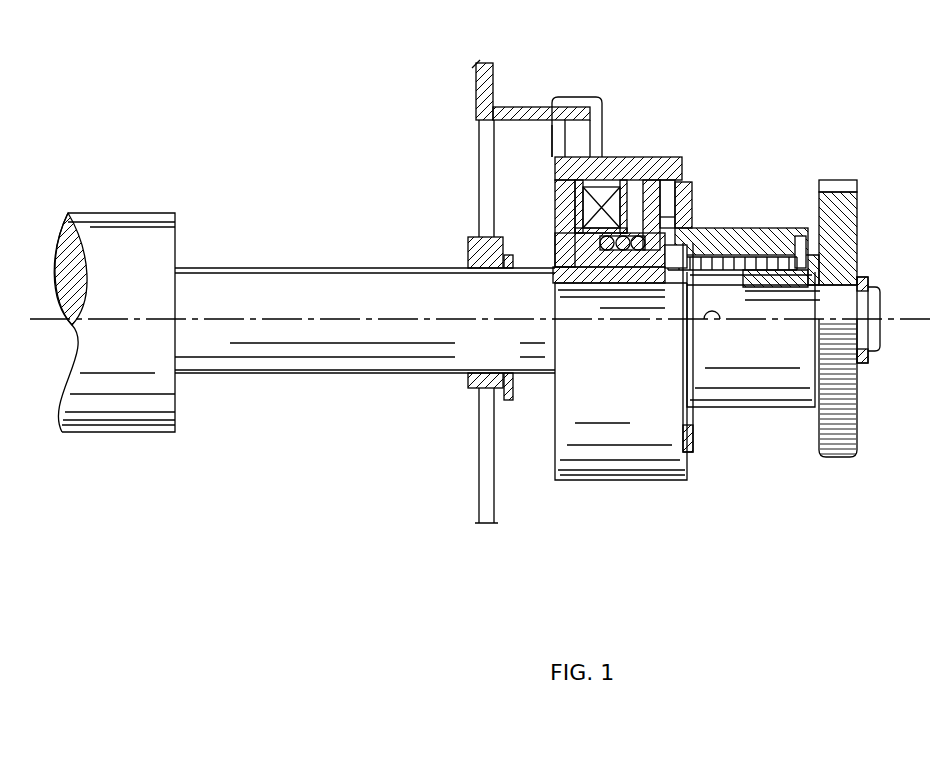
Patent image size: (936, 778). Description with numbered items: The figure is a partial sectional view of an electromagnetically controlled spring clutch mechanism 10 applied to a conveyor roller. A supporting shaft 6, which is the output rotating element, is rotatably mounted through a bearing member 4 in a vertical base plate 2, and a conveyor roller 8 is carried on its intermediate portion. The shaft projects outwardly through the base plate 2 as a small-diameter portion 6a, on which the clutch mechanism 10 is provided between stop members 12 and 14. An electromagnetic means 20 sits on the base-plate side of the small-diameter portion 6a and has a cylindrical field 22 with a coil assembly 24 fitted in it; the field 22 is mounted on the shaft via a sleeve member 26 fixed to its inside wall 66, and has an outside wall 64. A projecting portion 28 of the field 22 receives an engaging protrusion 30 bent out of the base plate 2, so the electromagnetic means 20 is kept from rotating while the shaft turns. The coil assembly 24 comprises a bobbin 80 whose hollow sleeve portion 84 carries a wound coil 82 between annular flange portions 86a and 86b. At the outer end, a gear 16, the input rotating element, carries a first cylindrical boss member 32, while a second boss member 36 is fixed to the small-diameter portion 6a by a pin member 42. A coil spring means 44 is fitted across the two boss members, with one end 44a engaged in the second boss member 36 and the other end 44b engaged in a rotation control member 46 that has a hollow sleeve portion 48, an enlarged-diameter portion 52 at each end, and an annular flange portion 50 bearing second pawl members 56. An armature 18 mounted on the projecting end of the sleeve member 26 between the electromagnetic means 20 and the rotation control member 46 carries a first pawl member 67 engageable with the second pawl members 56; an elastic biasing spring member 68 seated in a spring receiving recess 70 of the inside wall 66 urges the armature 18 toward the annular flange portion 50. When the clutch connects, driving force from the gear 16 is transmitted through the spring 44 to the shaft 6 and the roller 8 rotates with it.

The vertical base plate 2 is at (479, 486).
The bearing member 4 is at (468, 245).
The supporting shaft 6 is at (333, 373).
The small-diameter portion 6a is at (830, 290).
The conveyor roller 8 is at (130, 432).
The electromagnetically controlled spring clutch mechanism 10 is at (718, 478).
The stop member 12 is at (506, 265).
The stop member 14 is at (862, 290).
The gear 16 is at (850, 398).
The armature 18 is at (650, 192).
The electromagnetic means 20 is at (598, 480).
The field 22 is at (555, 432).
The coil assembly 24 is at (607, 177).
The sleeve member 26 is at (566, 210).
The projecting portion 28 is at (597, 130).
The engaging protrusion 30 is at (521, 107).
The first cylindrical boss member 32 is at (798, 236).
The second boss member 36 is at (715, 257).
The pin member 42 is at (712, 319).
The coil spring means 44 is at (757, 272).
The one end of coil spring means 44a is at (688, 272).
The other end of coil spring means 44b is at (825, 250).
The rotation control member 46 is at (750, 228).
The hollow sleeve portion 48 is at (772, 270).
The annular flange portion 50 is at (682, 200).
The enlarged-diameter portion 52 is at (676, 256).
The second pawl member 56 is at (668, 218).
The outside wall 64 is at (650, 460).
The inside wall 66 is at (600, 283).
The first pawl member 67 is at (685, 195).
The elastic biasing spring member 68 is at (641, 255).
The spring receiving recess 70 is at (610, 283).
The bobbin 80 is at (585, 210).
The coil 82 is at (580, 145).
The hollow sleeve portion 84 is at (620, 292).
The annular flange portion 86a is at (628, 195).
The annular flange portion 86b is at (578, 195).